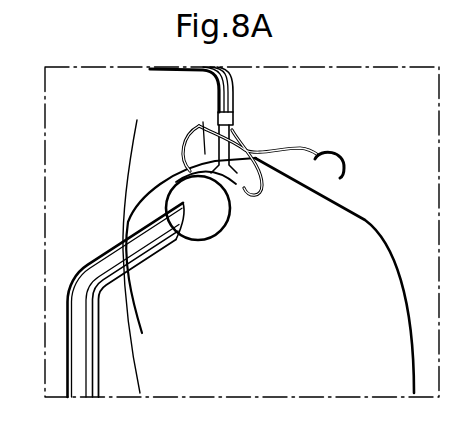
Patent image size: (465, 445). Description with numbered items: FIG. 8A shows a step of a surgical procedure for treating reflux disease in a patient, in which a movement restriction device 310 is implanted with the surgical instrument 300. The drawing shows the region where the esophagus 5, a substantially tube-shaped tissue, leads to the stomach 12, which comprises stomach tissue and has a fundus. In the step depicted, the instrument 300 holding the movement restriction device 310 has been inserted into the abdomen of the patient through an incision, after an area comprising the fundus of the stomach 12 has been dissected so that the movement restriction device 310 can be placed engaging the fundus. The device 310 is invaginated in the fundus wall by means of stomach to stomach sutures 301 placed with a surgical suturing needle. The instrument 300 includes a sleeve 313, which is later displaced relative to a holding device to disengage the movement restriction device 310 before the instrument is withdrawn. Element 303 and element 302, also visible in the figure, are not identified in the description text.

The stomach 12 is at (300, 344).
The esophagus 5 is at (147, 150).
The surgical instrument 300 is at (78, 266).
The sleeve 313 is at (100, 377).
The movement restriction device 310 is at (202, 207).
The upper arm rod 303 is at (187, 75).
The stomach to stomach sutures 301 is at (268, 148).
The hook 302 is at (340, 157).